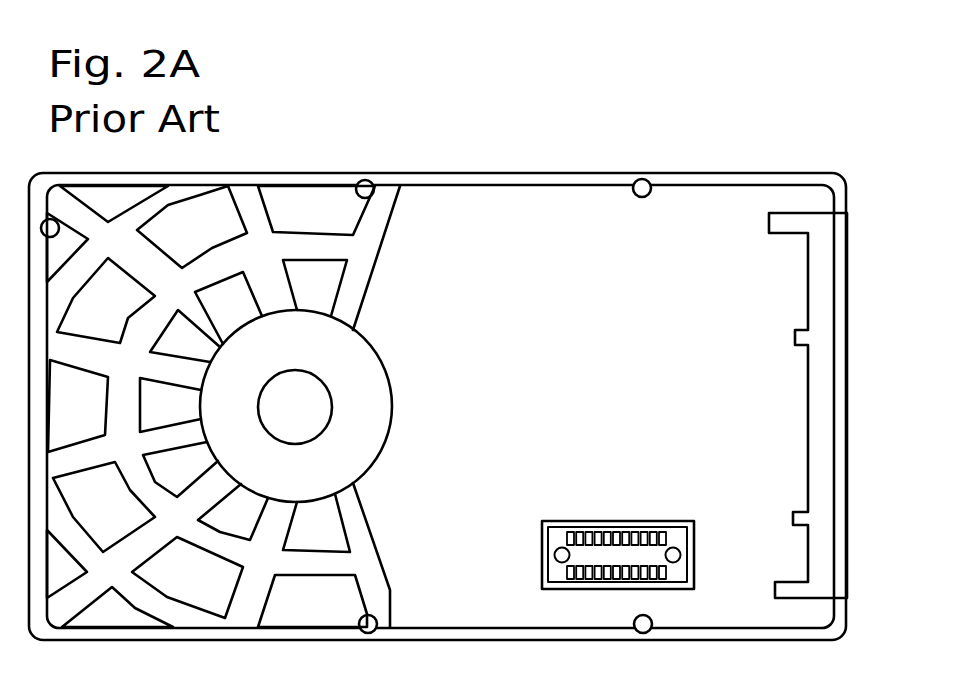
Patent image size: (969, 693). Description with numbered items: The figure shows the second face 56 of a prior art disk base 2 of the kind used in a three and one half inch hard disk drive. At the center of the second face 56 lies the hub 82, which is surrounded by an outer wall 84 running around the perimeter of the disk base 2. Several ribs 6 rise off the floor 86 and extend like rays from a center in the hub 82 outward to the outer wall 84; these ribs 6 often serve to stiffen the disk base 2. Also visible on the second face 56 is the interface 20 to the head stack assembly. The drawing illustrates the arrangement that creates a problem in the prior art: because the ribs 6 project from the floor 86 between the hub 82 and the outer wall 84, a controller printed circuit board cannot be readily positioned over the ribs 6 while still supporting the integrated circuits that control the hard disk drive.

The disk base 2 is at (658, 140).
The outer wall 84 is at (510, 185).
The second face 56 is at (672, 332).
The rib 6 is at (380, 227).
The floor 86 is at (315, 288).
The hub 82 is at (328, 421).
The interface 20 is at (542, 579).